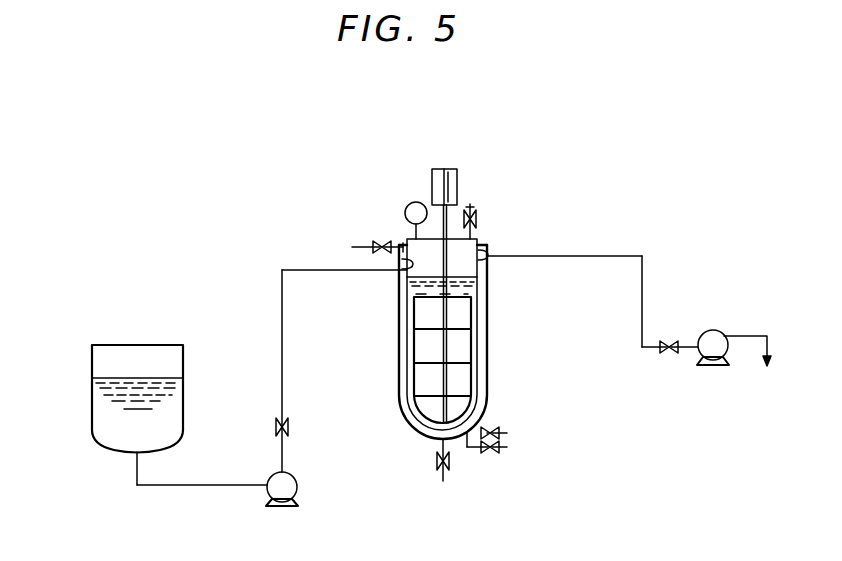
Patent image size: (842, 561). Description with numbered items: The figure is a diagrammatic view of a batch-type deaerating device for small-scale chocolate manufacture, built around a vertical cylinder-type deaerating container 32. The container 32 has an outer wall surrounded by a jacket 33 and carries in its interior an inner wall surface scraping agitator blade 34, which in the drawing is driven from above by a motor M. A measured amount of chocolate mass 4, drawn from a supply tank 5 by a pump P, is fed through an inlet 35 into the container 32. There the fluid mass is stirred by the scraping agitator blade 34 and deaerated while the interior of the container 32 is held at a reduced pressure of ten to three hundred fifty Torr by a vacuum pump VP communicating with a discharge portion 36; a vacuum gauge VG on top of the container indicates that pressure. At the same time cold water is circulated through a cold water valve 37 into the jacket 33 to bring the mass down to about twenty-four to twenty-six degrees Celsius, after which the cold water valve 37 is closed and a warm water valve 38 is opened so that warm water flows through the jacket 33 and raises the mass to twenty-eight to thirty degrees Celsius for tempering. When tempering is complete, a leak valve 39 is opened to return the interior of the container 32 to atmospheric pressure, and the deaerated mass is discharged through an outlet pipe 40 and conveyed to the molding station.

The chocolate mass 4 is at (112, 415).
The storage tank 5 is at (102, 365).
The deaerating container 32 is at (477, 239).
The jacket 33 is at (481, 285).
The scraping agitator blade 34 is at (463, 342).
The inlet 35 is at (410, 263).
The discharge portion 36 is at (488, 252).
The cold water valve 37 is at (503, 448).
The warm water valve 38 is at (500, 433).
The leak valve 39 is at (475, 207).
The outlet pipe 40 is at (443, 440).
The motor M is at (452, 190).
The pump P is at (267, 493).
The vacuum gauge VG is at (408, 205).
The vacuum pump VP is at (717, 330).